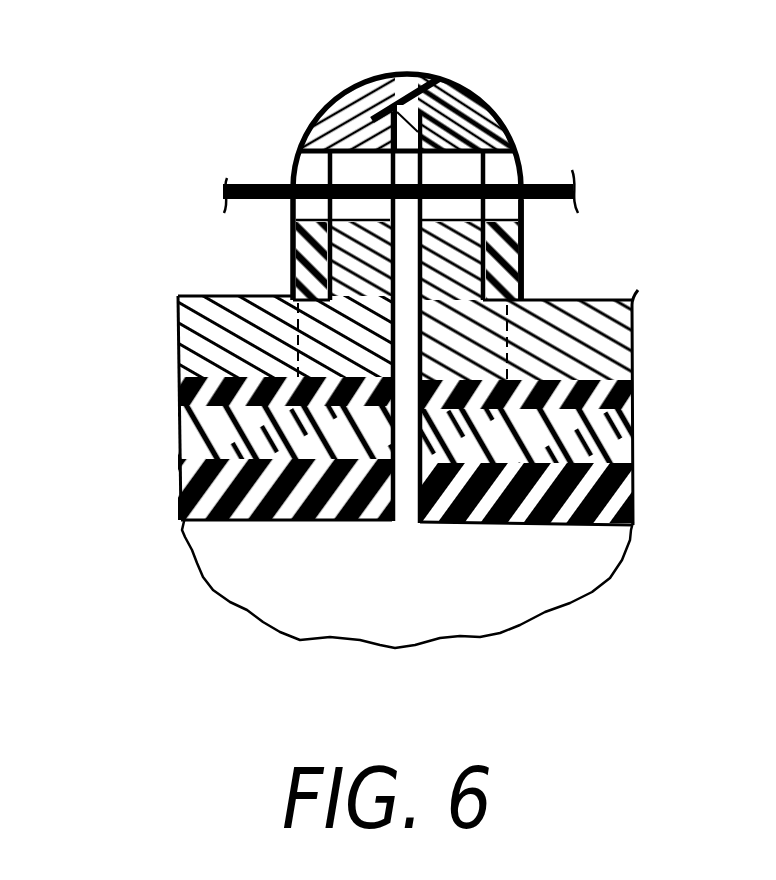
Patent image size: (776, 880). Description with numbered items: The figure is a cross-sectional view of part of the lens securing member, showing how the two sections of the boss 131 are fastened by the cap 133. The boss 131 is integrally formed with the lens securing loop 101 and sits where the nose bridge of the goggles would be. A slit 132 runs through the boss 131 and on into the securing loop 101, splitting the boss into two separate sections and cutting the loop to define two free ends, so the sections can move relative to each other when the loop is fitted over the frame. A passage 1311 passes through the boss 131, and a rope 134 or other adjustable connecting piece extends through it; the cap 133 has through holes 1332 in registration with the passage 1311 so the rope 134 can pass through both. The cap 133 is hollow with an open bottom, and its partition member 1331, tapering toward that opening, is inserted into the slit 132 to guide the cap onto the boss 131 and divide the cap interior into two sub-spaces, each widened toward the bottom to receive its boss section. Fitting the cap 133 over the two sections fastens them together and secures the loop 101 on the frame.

The lens securing loop 101 is at (595, 302).
The boss 131 is at (352, 252).
The slit 132 is at (518, 169).
The cap 133 is at (472, 95).
The rope 134 is at (258, 184).
The passage 1311 is at (363, 165).
The partition member 1331 is at (519, 263).
The through holes 1332 is at (500, 206).